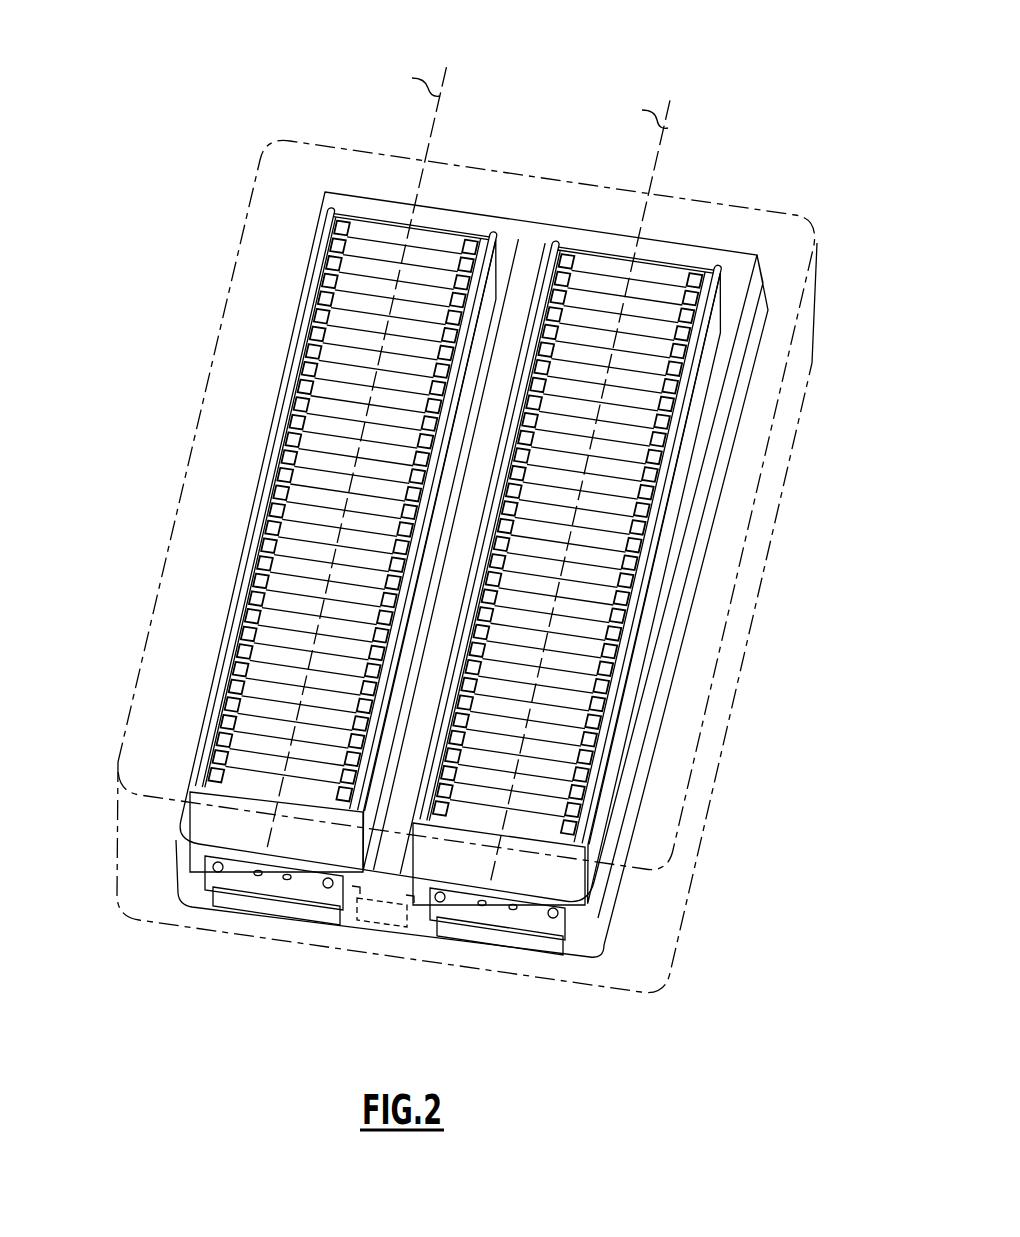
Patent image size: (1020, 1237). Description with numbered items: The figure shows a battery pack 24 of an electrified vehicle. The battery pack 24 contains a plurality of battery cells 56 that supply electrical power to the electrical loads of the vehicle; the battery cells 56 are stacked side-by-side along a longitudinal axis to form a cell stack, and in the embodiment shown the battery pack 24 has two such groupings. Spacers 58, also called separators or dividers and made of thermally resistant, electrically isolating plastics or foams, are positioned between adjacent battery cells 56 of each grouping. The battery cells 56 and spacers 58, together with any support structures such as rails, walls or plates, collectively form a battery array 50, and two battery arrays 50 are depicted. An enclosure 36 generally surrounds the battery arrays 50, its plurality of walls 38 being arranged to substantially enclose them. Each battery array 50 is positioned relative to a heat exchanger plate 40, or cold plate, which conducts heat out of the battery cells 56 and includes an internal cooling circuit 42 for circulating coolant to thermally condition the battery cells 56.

The battery pack 24 is at (452, 102).
The enclosure 36 is at (197, 386).
The walls 38 is at (466, 158).
The heat exchanger plate 40 is at (597, 917).
The internal cooling circuit 42 is at (365, 890).
The battery array 50 is at (476, 505).
The battery cells 56 is at (583, 295).
The spacers 58 is at (293, 560).